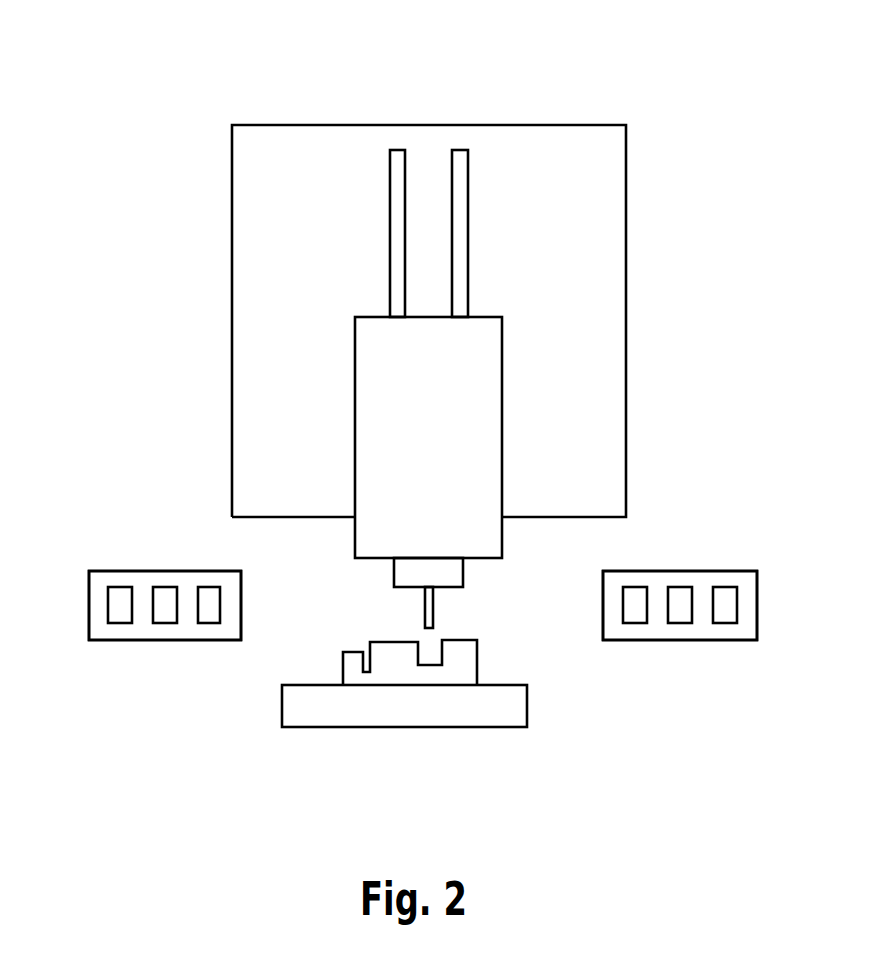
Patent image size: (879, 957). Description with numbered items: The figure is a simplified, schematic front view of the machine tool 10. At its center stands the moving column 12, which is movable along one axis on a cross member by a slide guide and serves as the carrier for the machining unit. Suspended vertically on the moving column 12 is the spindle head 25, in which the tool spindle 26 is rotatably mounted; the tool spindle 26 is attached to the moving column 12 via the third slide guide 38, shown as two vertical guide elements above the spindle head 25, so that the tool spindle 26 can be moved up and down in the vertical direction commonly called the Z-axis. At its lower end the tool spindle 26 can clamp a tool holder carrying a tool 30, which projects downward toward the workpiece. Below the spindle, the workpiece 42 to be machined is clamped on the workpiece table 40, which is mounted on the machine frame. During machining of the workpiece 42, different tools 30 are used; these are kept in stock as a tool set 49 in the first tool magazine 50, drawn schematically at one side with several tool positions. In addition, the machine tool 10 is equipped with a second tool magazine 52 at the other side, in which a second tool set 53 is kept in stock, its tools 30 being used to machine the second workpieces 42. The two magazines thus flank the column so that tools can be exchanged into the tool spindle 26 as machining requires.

The machine tool 10 is at (682, 88).
The moving column 12 is at (616, 336).
The third slide guide 38 is at (462, 223).
The spindle head 25 is at (492, 455).
The tool spindle 26 is at (455, 575).
The workpiece 42 is at (395, 663).
The workpiece table 40 is at (452, 717).
The second tool magazine 52 is at (230, 630).
The second tool set 53 is at (137, 574).
The tool 30 is at (165, 622).
The first tool magazine 50 is at (745, 630).
The tool set 49 is at (712, 574).